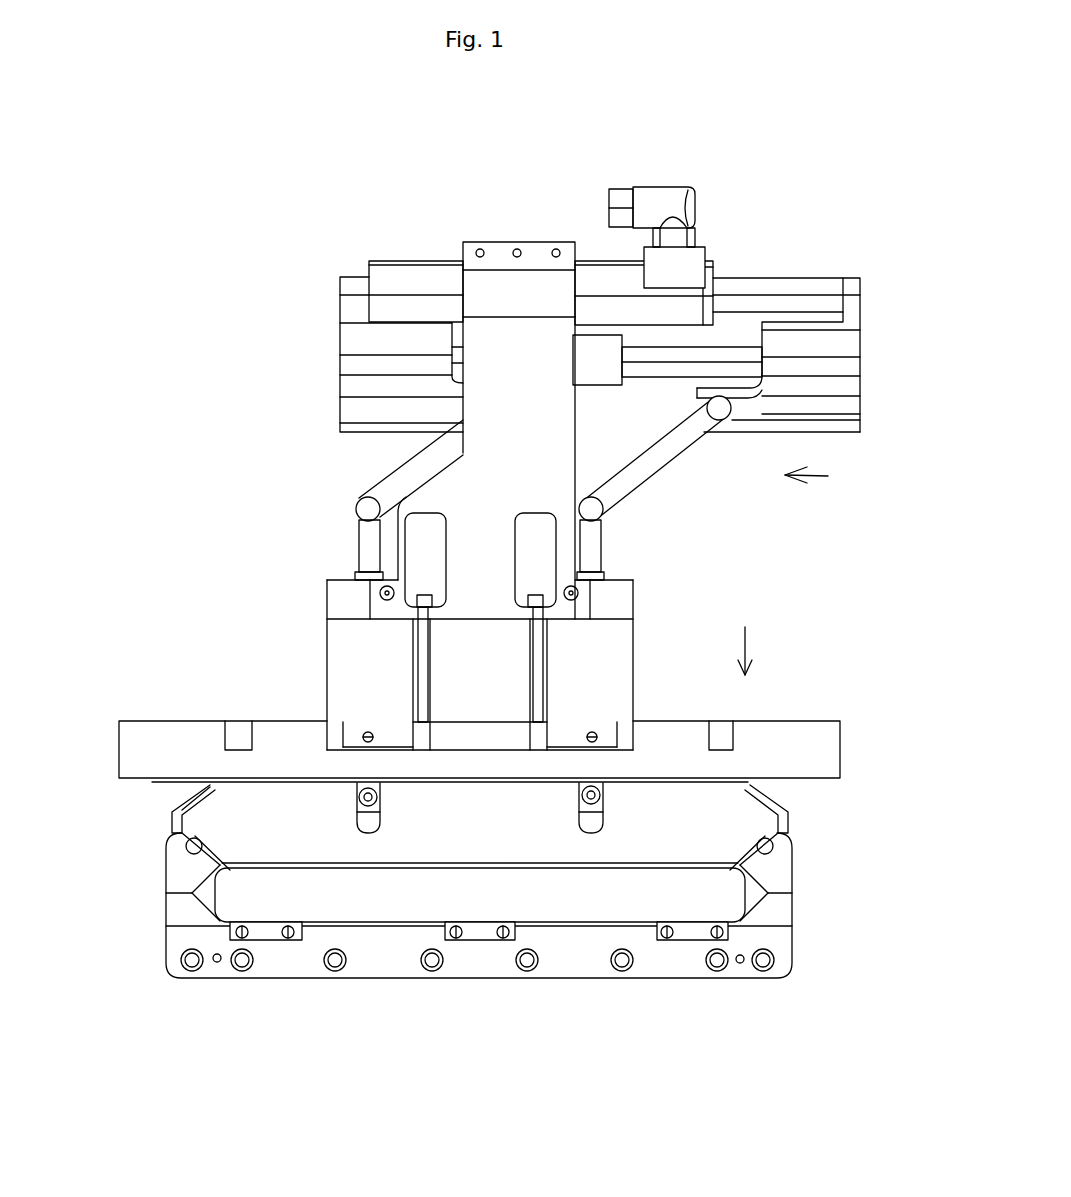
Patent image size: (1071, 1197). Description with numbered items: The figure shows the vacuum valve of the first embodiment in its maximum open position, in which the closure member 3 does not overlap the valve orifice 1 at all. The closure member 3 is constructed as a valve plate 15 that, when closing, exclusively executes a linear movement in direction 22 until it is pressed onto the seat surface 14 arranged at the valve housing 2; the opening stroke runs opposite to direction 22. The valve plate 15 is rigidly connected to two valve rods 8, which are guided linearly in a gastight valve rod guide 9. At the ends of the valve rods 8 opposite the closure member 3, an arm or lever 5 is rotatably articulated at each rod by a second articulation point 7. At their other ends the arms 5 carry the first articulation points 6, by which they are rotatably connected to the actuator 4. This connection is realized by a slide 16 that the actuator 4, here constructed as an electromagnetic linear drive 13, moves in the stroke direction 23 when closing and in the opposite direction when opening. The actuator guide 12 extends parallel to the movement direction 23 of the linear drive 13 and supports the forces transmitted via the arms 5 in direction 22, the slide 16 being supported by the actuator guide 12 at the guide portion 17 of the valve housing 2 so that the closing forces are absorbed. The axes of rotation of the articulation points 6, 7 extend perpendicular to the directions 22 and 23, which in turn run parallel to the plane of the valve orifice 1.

The valve orifice 1 is at (722, 900).
The valve housing 2 is at (783, 733).
The closure member 3 is at (743, 805).
The actuator 4 is at (412, 283).
The arm or lever 5 is at (397, 473).
The first articulation point 6 is at (722, 411).
The second articulation point 7 is at (367, 508).
The valve rod 8 is at (367, 545).
The valve rod guide 9 is at (342, 657).
The actuator guide 12 is at (722, 357).
The electromagnetic linear drive 13 is at (430, 272).
The seat surface 14 is at (217, 917).
The valve plate 15 is at (210, 820).
The slide 16 is at (352, 335).
The guide portion 17 is at (537, 250).
The direction 22 is at (748, 647).
The stroke direction 23 is at (828, 476).